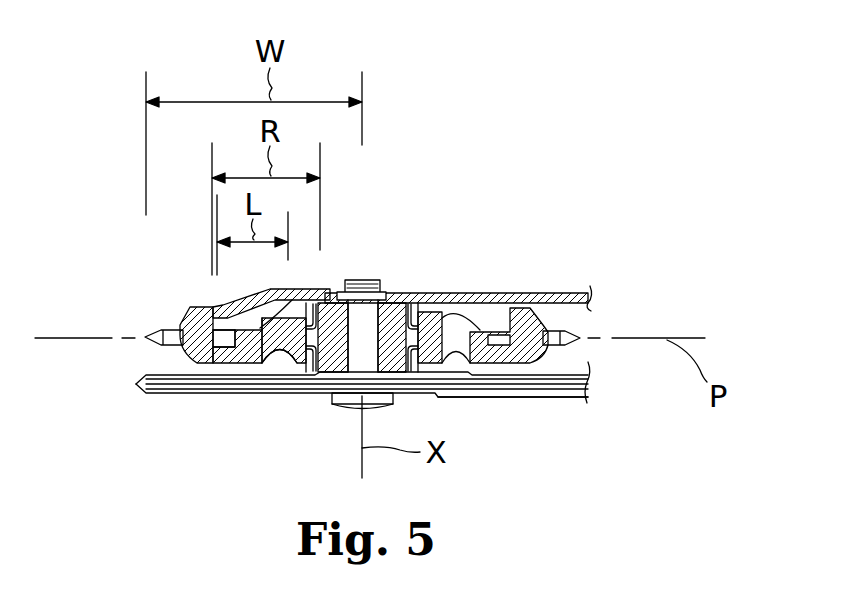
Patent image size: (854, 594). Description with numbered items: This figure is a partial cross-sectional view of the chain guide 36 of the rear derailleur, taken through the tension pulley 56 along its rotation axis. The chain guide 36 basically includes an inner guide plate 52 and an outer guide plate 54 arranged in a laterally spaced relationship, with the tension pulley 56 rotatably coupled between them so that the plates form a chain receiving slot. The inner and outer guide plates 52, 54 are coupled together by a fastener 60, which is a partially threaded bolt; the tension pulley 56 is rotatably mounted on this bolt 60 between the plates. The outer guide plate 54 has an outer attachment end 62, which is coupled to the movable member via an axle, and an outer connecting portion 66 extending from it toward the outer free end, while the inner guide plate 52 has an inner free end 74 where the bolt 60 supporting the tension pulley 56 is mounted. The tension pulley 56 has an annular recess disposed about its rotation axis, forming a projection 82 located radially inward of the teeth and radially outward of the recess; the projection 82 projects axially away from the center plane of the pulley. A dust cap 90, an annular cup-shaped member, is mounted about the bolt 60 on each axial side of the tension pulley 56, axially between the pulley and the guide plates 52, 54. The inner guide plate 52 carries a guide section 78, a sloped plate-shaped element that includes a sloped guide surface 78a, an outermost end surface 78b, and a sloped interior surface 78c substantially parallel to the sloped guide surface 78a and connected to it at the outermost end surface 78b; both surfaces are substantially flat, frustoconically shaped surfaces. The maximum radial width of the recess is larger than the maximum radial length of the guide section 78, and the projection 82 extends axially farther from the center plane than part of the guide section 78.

The chain guide 36 is at (611, 232).
The inner guide plate 52 is at (487, 290).
The outer guide plate 54 is at (503, 405).
The tension pulley 56 is at (149, 358).
The fastener 60 is at (376, 283).
The outer attachment end 62 is at (165, 394).
The outer connecting portion 66 is at (565, 397).
The inner free end 74 is at (332, 283).
The guide section 78 is at (243, 302).
The sloped guide surface 78a is at (250, 307).
The outermost end surface 78b is at (213, 305).
The sloped interior surface 78c is at (276, 350).
The projection 82 is at (183, 318).
The dust cap 90 is at (413, 303).